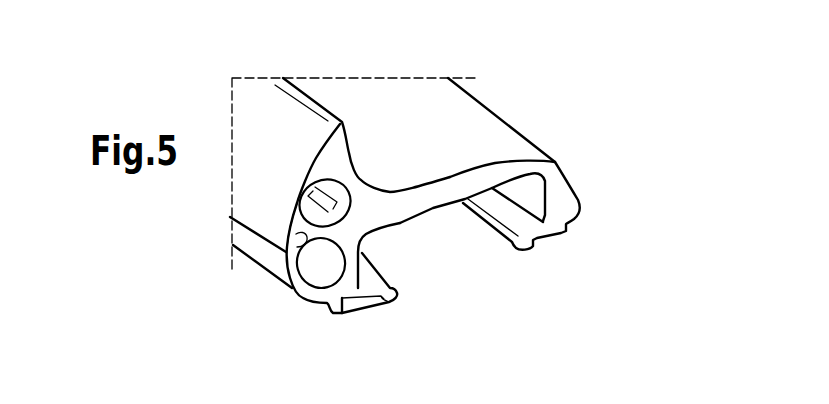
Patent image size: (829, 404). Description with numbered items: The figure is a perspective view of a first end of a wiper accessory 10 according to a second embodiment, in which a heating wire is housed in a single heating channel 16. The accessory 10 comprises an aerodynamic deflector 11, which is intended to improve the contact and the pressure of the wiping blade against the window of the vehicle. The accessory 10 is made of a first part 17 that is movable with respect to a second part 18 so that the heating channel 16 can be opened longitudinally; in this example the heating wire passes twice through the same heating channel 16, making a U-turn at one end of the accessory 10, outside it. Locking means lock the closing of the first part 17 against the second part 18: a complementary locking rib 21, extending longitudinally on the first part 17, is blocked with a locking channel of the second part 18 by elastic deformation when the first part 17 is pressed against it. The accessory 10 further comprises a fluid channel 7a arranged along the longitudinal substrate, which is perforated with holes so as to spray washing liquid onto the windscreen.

The accessory 10 is at (506, 98).
The aerodynamic deflector 11 is at (327, 142).
The heating channel 16 is at (336, 188).
The first part 17 is at (295, 213).
The second part 18 is at (518, 143).
The locking rib 21 is at (298, 236).
The fluid channel 7a is at (317, 273).